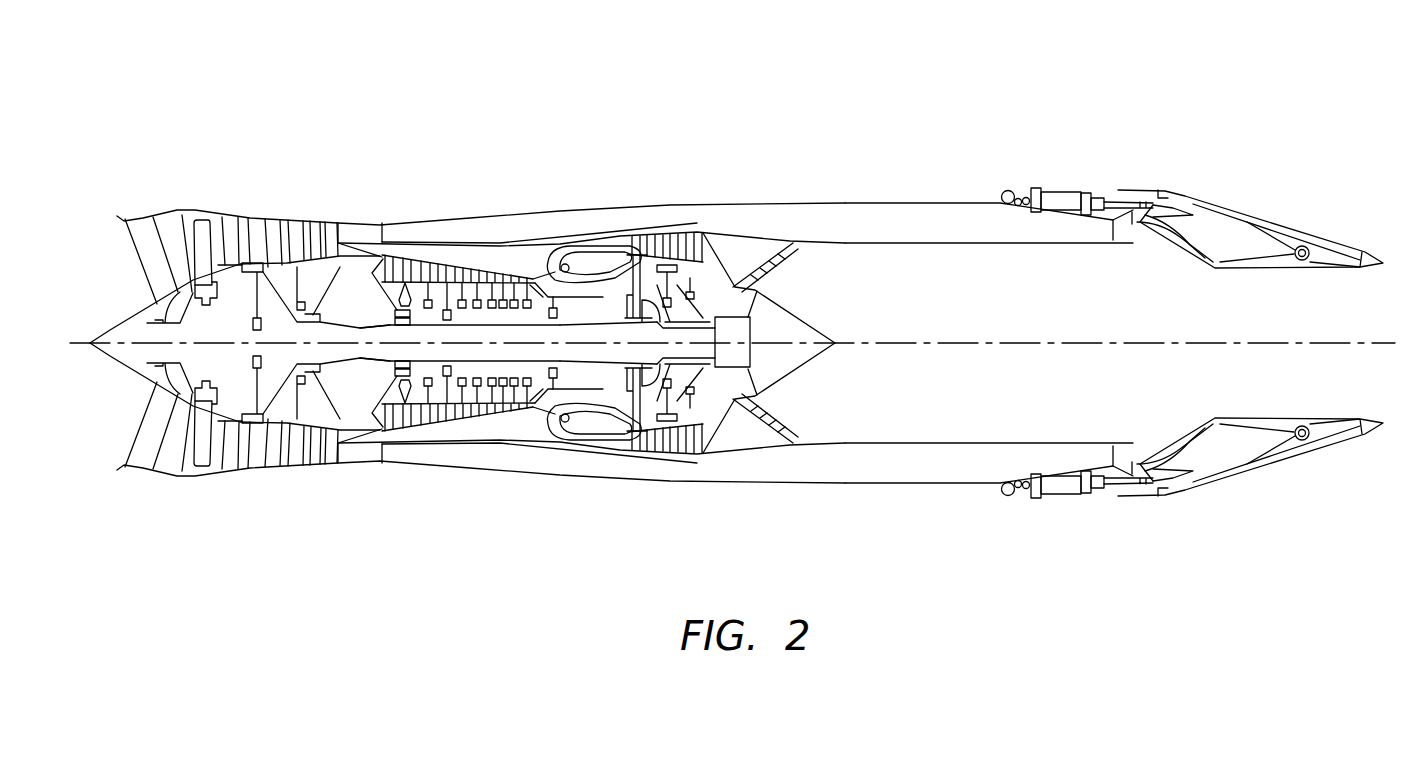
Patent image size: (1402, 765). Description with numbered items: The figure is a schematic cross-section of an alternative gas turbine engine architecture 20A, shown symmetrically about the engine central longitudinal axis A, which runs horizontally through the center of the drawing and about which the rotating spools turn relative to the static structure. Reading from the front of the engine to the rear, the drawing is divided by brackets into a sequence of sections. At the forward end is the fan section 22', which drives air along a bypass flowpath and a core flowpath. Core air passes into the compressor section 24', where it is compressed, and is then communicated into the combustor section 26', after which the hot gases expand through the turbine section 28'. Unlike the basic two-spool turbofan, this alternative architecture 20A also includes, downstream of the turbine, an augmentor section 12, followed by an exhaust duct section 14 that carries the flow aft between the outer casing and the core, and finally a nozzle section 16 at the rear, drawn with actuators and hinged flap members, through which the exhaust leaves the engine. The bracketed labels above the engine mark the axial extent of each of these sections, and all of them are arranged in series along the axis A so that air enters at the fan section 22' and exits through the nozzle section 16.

The alternative engine architecture 20A is at (732, 263).
The fan section 22' is at (240, 291).
The compressor section 24' is at (469, 287).
The combustor section 26' is at (602, 275).
The turbine section 28' is at (680, 282).
The augmentor section 12 is at (845, 166).
The exhaust duct section 14 is at (1125, 166).
The nozzle section 16 is at (1380, 166).
The engine central longitudinal axis A is at (953, 343).